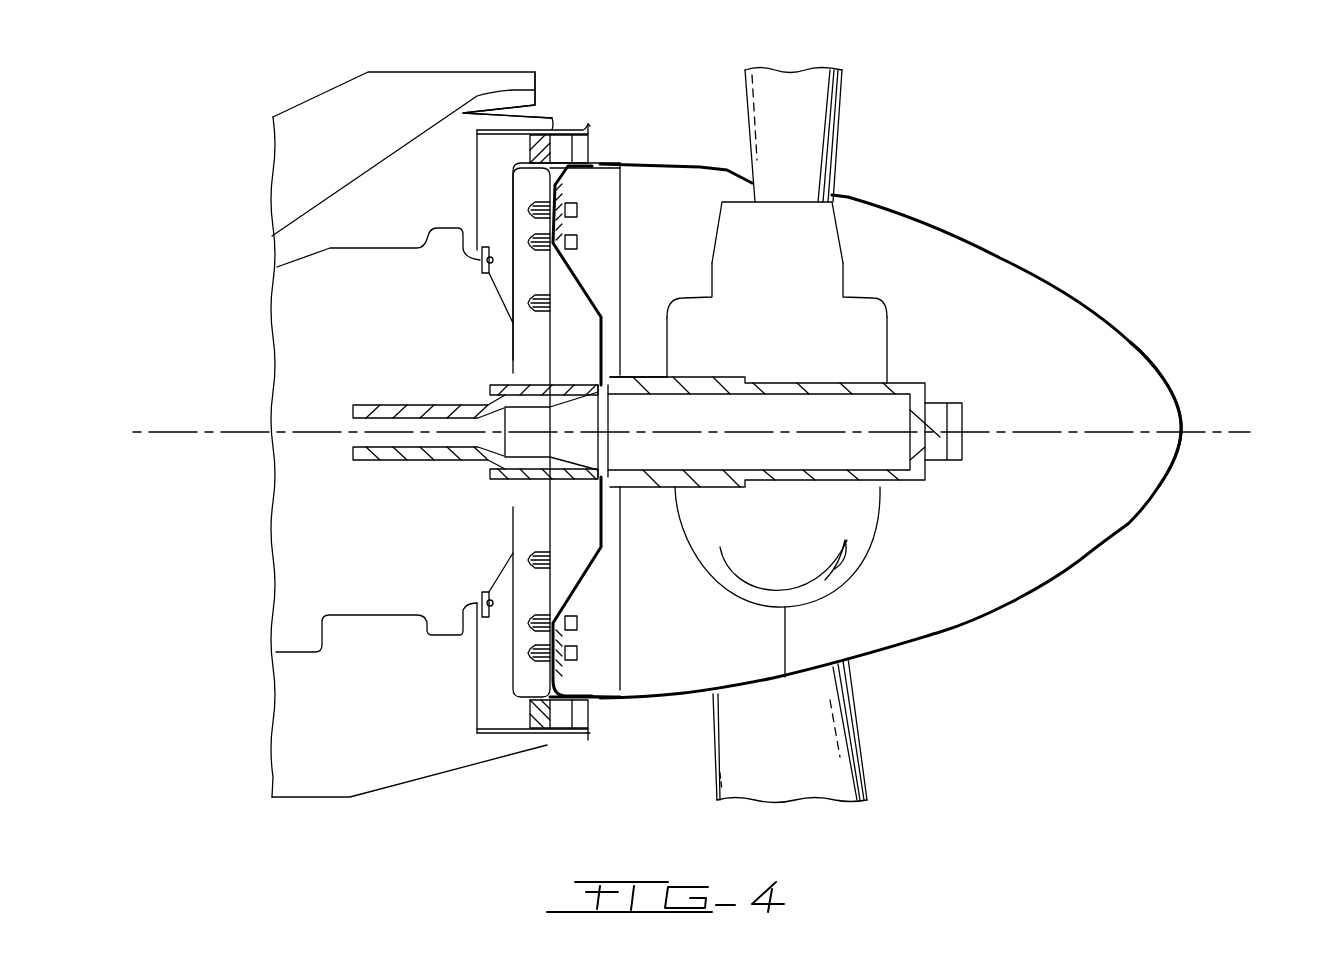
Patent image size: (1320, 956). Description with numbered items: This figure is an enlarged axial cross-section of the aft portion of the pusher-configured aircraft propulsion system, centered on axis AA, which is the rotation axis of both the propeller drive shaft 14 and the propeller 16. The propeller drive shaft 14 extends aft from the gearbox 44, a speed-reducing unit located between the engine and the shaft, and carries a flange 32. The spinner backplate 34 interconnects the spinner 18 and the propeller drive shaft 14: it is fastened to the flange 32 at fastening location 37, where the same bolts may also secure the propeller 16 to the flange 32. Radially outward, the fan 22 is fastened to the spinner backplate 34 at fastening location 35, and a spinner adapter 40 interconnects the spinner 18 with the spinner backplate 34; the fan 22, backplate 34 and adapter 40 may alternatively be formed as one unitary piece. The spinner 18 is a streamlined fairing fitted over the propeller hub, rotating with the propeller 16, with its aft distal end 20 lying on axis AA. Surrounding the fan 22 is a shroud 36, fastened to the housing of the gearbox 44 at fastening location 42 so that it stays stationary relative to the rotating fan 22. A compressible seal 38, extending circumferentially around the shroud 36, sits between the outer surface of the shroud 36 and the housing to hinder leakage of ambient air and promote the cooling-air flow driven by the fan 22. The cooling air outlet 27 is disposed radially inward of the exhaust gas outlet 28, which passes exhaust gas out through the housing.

The propeller drive shaft 14 is at (506, 399).
The propeller 16 is at (842, 93).
The spinner 18 is at (1037, 270).
The aft distal end 20 is at (1182, 433).
The fan 22 is at (533, 690).
The cooling air outlet 27 is at (598, 151).
The exhaust gas outlet 28 is at (535, 82).
The flange 32 is at (615, 497).
The spinner backplate 34 is at (620, 552).
The fastening location 35 is at (527, 217).
The shroud 36 is at (590, 728).
The fastening location 37 is at (550, 352).
The seal 38 is at (534, 737).
The spinner adapter 40 is at (608, 683).
The fastening location 42 is at (478, 630).
The gearbox 44 is at (300, 535).
The axis AA is at (152, 433).